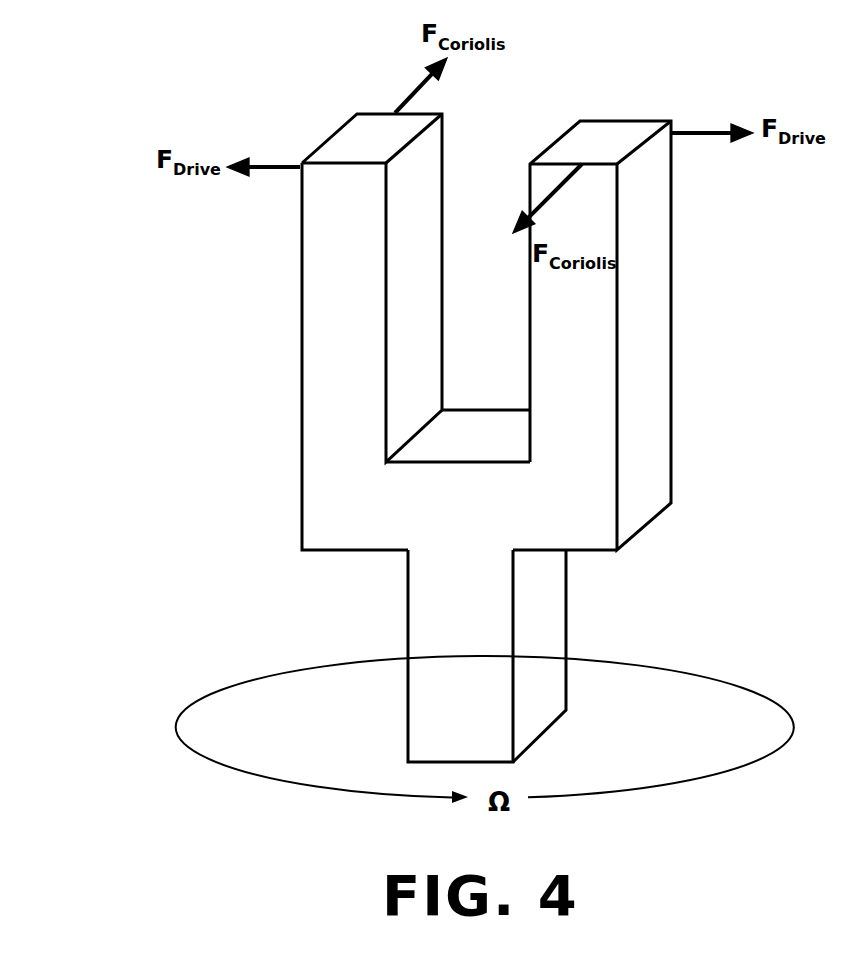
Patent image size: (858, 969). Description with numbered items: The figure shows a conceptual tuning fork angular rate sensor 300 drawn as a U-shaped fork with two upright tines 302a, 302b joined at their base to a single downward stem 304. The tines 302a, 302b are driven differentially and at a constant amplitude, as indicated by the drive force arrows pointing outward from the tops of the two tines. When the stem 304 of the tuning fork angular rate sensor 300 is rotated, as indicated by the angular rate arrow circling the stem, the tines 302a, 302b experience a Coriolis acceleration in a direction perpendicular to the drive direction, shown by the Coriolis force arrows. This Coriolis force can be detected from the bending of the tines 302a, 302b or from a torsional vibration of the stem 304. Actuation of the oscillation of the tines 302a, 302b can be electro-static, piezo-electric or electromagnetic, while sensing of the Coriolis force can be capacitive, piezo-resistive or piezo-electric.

The tuning fork angular rate sensor 300 is at (134, 325).
The tine 302a is at (375, 364).
The tine 302b is at (605, 364).
The stem 304 is at (481, 682).